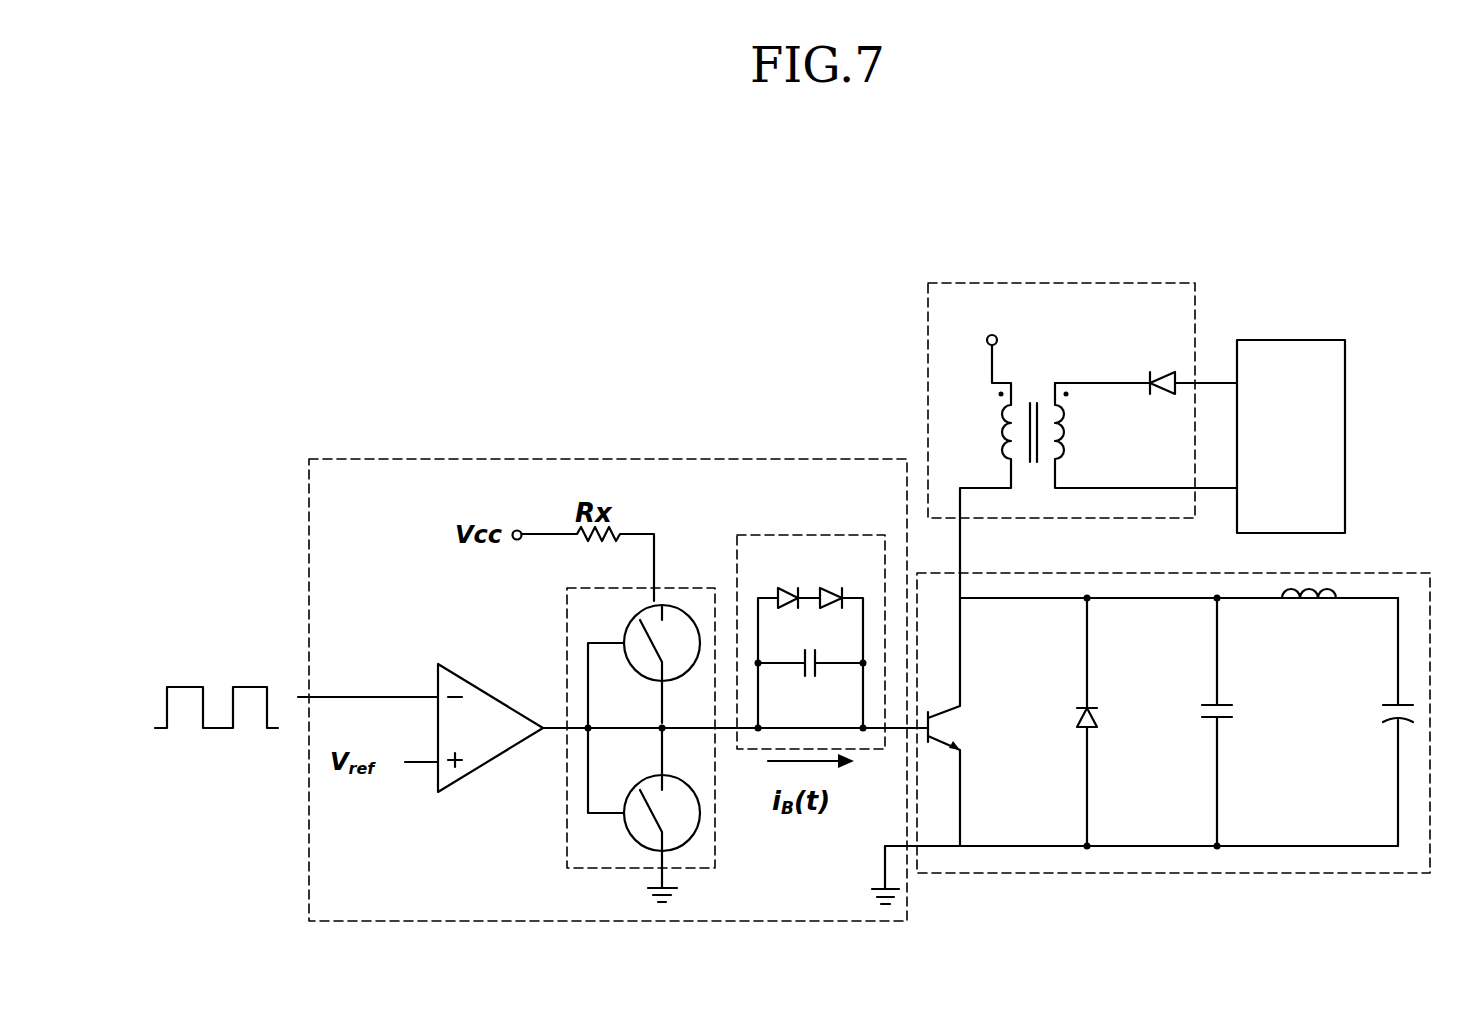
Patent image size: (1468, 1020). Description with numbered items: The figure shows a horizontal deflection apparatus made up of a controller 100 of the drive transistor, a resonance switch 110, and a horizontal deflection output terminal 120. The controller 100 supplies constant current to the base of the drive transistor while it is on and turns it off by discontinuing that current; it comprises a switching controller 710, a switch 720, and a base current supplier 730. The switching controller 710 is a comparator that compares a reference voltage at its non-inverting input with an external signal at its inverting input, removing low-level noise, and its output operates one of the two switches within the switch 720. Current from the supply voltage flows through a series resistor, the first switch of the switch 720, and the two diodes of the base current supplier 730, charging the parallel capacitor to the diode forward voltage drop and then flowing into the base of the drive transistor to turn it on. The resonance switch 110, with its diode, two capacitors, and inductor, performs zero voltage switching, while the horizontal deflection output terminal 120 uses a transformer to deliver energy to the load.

The controller 100 is at (597, 458).
The resonance switch 110 is at (1174, 876).
The horizontal deflection output terminal 120 is at (1065, 283).
The switching controller 710 is at (460, 778).
The switch 720 is at (567, 612).
The base current supplier 730 is at (788, 535).